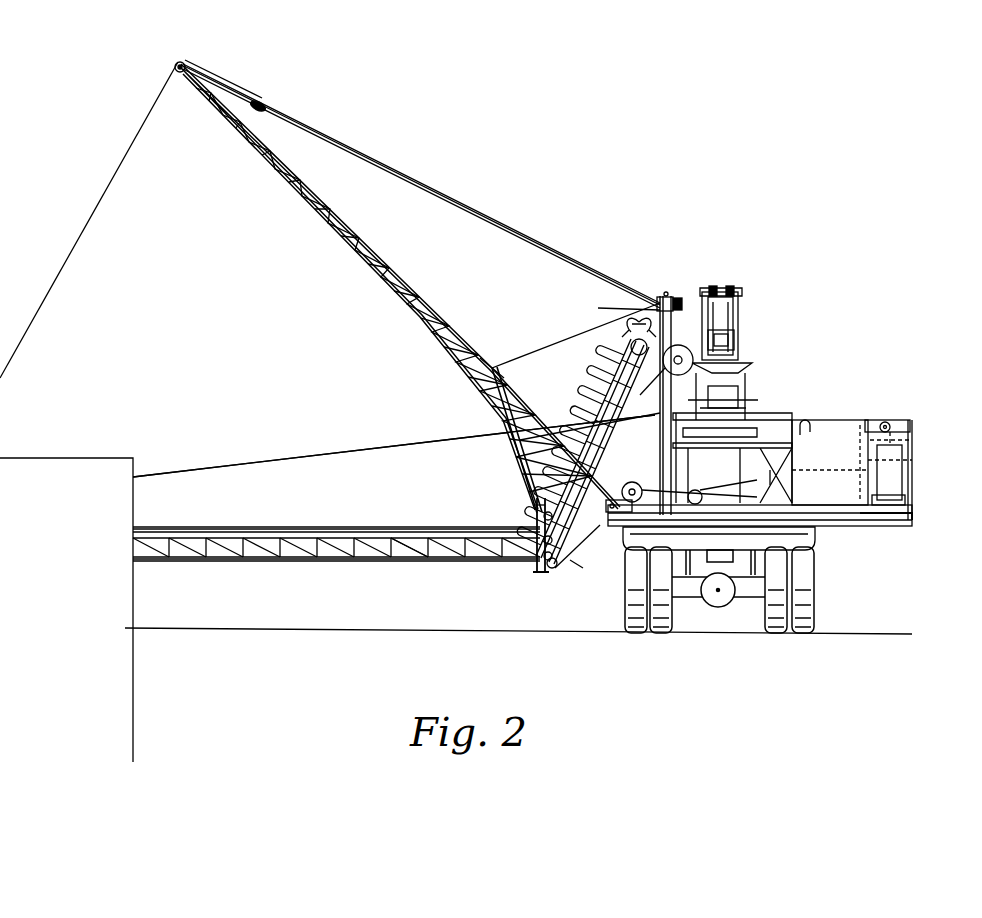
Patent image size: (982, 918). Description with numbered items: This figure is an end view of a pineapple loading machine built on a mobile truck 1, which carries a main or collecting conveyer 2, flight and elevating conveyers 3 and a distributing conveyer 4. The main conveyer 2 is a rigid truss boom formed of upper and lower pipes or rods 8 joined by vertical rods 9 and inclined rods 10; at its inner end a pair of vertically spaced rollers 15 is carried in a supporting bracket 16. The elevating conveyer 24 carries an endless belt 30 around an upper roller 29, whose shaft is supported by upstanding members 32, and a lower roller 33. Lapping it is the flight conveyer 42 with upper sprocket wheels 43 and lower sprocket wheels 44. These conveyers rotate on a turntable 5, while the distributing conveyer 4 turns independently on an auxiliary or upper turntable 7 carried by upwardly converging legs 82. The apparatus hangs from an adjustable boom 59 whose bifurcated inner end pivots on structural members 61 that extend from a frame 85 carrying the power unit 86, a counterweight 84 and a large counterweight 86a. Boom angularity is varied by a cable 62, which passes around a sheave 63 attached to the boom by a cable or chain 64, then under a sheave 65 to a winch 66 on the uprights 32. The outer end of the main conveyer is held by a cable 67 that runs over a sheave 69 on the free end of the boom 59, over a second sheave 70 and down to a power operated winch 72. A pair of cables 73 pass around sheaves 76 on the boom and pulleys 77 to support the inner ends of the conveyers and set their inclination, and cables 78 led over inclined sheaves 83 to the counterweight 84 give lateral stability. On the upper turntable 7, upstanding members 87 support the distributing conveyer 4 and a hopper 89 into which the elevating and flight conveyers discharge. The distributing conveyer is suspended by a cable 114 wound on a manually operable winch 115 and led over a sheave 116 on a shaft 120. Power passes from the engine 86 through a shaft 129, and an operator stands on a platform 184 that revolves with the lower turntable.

The mobile truck 1 is at (816, 546).
The main or collecting conveyer 2 is at (295, 564).
The flight and elevating conveyers 3 is at (592, 400).
The distributing conveyer 4 is at (742, 395).
The turntable 5 is at (815, 524).
The auxiliary or upper turntable 7 is at (752, 440).
The upper and lower pipes or rods 8 is at (340, 512).
The vertical rods 9 is at (340, 561).
The inclined rods 10 is at (410, 556).
The rollers or pulleys 15 is at (534, 568).
The supporting bracket 16 is at (518, 470).
The elevating conveyer 24 is at (585, 548).
The roller or pulley 29 is at (669, 358).
The endless belt 30 is at (583, 562).
The upstanding members 32 is at (619, 306).
The pulley or roller 33 is at (553, 568).
The flight conveyer 42 is at (598, 368).
The upper sprocket wheels 43 is at (630, 342).
The lower sprocket wheels 44 is at (535, 504).
The adjustable boom 59 is at (352, 246).
The structural members 61 is at (615, 512).
The cable 62 is at (478, 225).
The sheave 63 is at (268, 110).
The cable or chain 64 is at (240, 96).
The sheave 65 is at (666, 292).
The winch 66 is at (679, 296).
The cable 67 is at (445, 192).
The sheave 69 is at (173, 64).
The second sheave 70 is at (658, 300).
The power operated winch 72 is at (590, 410).
The cables 73 is at (548, 345).
The sheaves 76 is at (490, 366).
The pulleys 77 is at (540, 516).
The cables 78 is at (352, 452).
The upwardly converging legs 82 is at (700, 476).
The relatively inclined sheaves 83 is at (887, 422).
The counterweight 84 is at (905, 424).
The frame 85 is at (880, 516).
The power unit 86 is at (825, 445).
The large counterweight 86a is at (914, 470).
The upstanding members 87 is at (716, 290).
The hopper 89 is at (752, 366).
The cable 114 is at (735, 318).
The manually operable winch 115 is at (737, 342).
The sheave 116 is at (730, 288).
The shaft 120 is at (735, 289).
The shaft 129 is at (775, 485).
The platform 184 is at (794, 425).